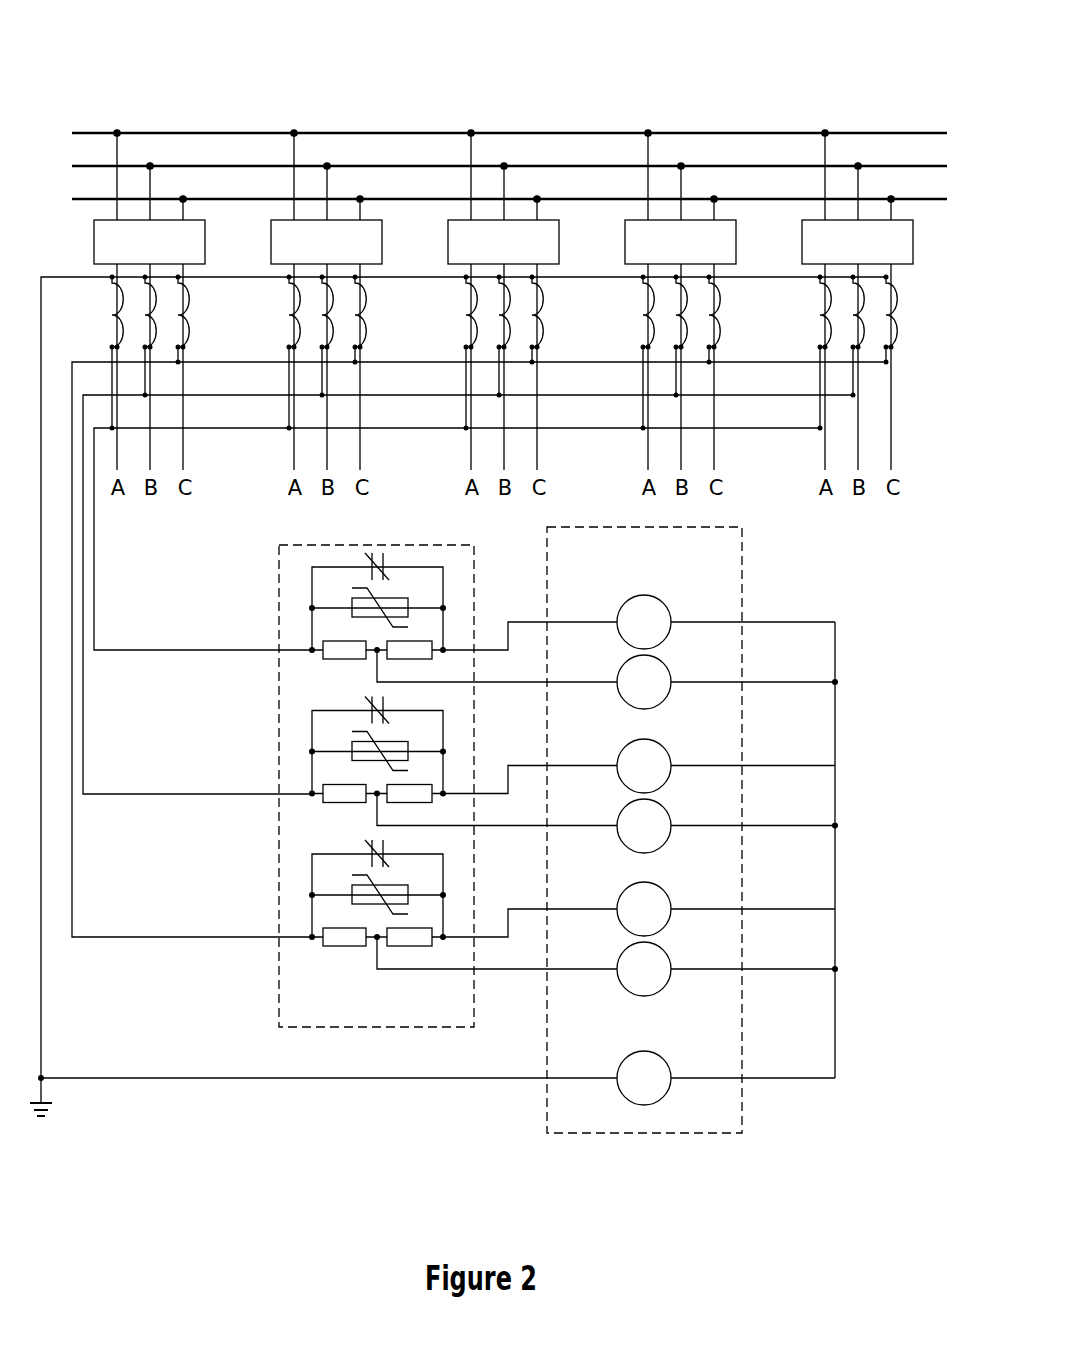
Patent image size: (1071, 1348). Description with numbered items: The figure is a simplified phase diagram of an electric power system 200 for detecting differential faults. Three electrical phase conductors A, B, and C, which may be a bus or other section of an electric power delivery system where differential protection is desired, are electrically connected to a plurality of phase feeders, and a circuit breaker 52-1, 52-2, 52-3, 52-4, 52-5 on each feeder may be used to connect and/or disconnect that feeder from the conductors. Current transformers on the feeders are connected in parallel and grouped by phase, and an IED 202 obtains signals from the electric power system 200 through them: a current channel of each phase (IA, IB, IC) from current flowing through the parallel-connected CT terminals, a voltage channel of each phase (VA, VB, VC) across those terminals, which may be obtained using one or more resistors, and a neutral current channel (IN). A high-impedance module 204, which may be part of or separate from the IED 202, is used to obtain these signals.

The electric power system 200 is at (128, 88).
The circuit breaker 52-1 is at (149, 315).
The circuit breaker 52-2 is at (326, 315).
The circuit breaker 52-3 is at (503, 315).
The circuit breaker 52-4 is at (680, 315).
The circuit breaker 52-5 is at (857, 315).
The IED 202 is at (690, 1135).
The high-impedance module 204 is at (438, 1030).